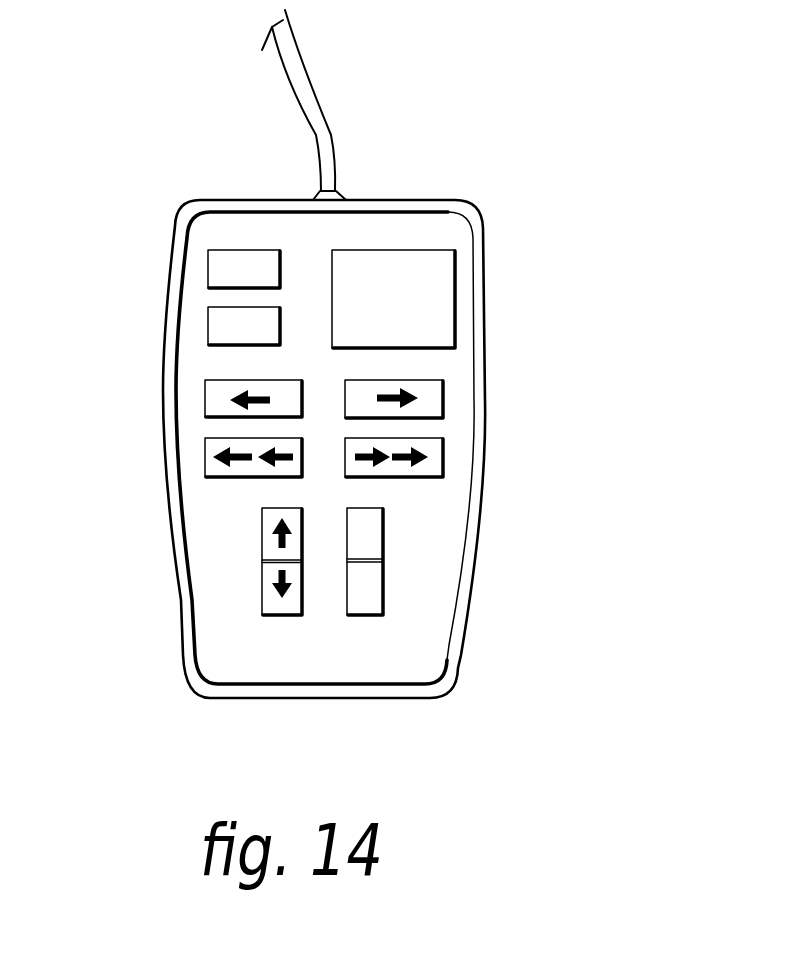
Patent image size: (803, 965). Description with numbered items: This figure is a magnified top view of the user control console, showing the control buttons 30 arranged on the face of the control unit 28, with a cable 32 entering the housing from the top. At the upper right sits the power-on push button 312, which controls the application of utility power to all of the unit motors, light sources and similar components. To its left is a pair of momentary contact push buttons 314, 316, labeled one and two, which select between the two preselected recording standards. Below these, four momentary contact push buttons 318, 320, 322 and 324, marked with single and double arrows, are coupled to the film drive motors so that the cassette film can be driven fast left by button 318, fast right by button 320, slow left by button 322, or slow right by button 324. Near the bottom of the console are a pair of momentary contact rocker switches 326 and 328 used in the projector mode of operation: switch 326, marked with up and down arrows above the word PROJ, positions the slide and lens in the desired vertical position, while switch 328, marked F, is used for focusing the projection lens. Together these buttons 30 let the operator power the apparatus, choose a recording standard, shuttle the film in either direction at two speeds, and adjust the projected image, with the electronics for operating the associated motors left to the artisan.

The control unit 28 is at (257, 198).
The control buttons 30 is at (450, 236).
The cable 32 is at (318, 86).
The power-on push button 312 is at (388, 268).
The momentary contact push button 314 is at (220, 260).
The momentary contact push button 316 is at (217, 327).
The momentary contact push button 318 is at (228, 442).
The momentary contact push button 320 is at (430, 458).
The momentary contact push button 322 is at (252, 382).
The momentary contact push button 324 is at (425, 390).
The momentary contact rocker switch 326 is at (270, 546).
The momentary contact rocker switch 328 is at (368, 542).